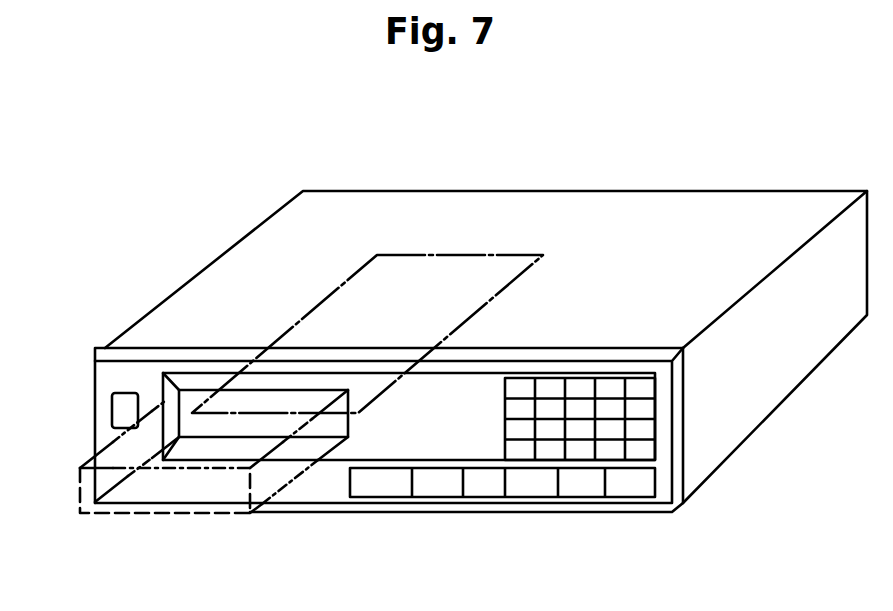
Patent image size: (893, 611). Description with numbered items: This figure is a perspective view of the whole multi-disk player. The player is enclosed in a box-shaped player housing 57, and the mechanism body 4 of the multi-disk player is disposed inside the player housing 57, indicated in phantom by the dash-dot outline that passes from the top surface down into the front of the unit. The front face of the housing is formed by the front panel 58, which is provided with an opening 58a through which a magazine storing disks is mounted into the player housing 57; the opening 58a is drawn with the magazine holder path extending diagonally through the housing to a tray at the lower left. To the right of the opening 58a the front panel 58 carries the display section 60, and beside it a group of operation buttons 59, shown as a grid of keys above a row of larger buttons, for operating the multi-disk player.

The mechanism body 4 is at (512, 255).
The player housing 57 is at (332, 207).
The front panel 58 is at (107, 373).
The opening 58a is at (280, 418).
The operation buttons 59 is at (645, 428).
The display section 60 is at (448, 427).